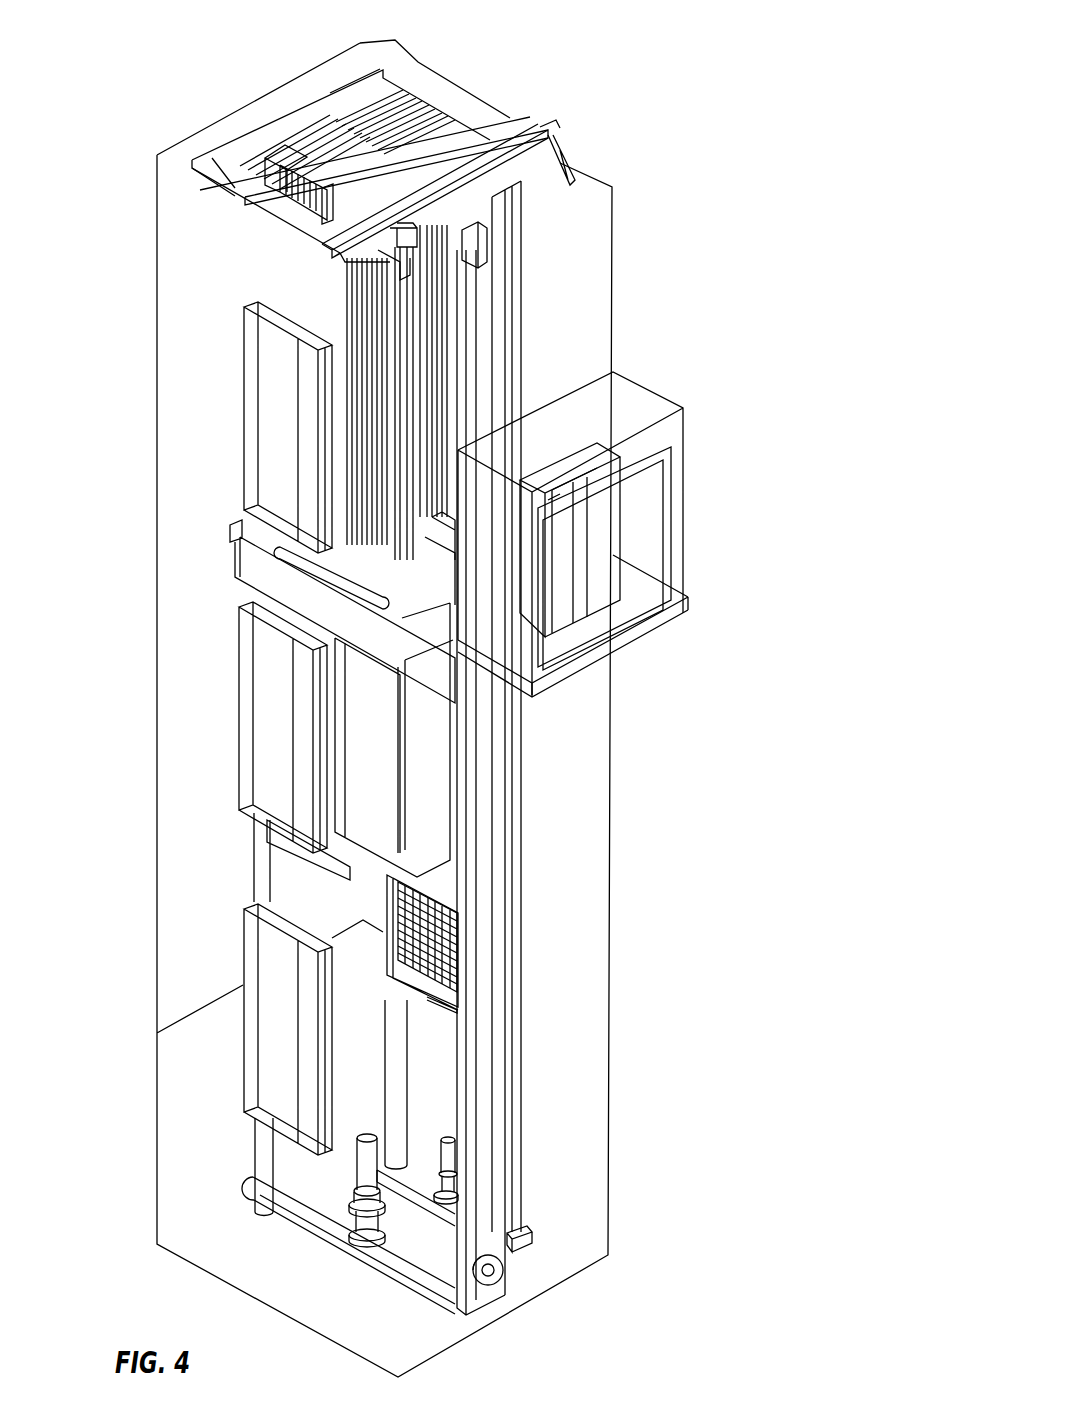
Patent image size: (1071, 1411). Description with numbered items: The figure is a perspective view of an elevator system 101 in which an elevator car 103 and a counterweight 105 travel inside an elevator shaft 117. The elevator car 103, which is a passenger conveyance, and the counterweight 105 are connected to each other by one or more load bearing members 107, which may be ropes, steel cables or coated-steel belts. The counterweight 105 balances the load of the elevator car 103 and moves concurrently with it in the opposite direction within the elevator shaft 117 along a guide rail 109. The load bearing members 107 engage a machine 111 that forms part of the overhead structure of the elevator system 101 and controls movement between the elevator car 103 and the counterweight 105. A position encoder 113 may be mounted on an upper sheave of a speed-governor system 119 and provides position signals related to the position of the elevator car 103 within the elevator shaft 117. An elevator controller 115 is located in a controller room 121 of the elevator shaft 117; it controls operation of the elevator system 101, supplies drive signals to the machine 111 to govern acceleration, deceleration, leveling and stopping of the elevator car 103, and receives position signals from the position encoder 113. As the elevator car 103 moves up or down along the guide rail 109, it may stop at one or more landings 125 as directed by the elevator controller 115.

The elevator system 101 is at (648, 55).
The elevator car 103 is at (383, 755).
The counterweight 105 is at (443, 963).
The load bearing members 107 is at (403, 407).
The guide rail 109 is at (483, 875).
The machine 111 is at (278, 148).
The position encoder 113 is at (483, 248).
The elevator controller 115 is at (613, 547).
The elevator shaft 117 is at (384, 710).
The speed-governor system 119 is at (503, 286).
The controller room 121 is at (712, 403).
The landings 125 is at (233, 413).